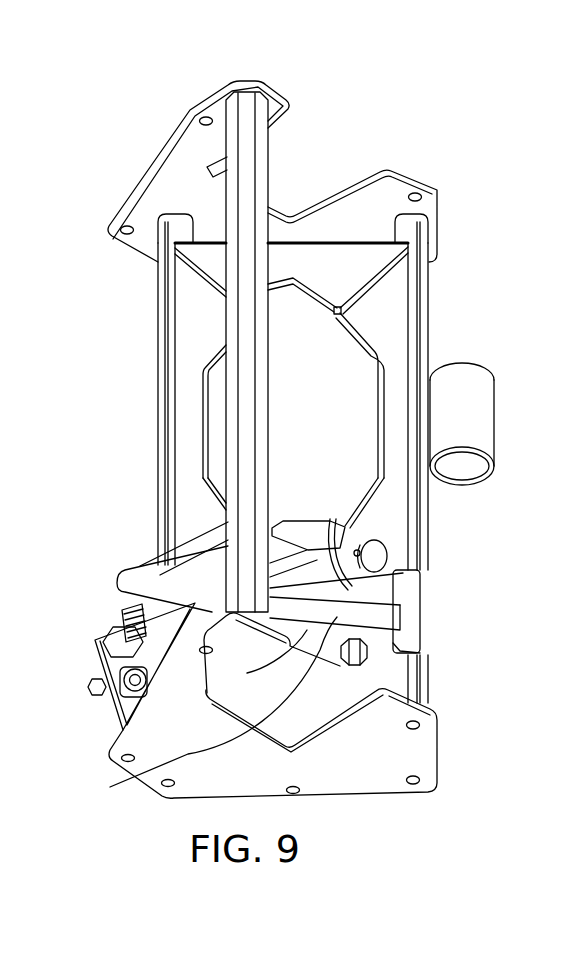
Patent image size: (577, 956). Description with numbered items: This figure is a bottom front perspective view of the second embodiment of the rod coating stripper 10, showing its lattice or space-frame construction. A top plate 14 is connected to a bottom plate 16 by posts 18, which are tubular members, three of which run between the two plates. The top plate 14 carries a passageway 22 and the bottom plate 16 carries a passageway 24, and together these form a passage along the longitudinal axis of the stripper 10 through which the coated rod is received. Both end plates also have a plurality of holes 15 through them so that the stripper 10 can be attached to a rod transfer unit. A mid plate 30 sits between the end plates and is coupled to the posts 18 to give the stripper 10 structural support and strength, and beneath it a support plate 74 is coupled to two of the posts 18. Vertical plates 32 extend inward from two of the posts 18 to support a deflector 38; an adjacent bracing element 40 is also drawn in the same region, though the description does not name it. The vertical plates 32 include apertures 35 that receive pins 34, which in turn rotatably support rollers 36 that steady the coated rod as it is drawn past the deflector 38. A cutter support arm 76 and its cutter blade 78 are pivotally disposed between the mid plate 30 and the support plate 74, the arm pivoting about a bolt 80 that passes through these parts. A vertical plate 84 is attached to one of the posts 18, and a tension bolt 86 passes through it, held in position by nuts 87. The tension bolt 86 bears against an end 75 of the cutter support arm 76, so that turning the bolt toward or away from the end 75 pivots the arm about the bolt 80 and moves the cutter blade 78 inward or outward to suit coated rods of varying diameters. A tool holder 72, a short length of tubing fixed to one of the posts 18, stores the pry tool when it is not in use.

The rod coating stripper 10 is at (346, 71).
The top plate 14 is at (415, 170).
The holes 15 is at (205, 126).
The bottom plate 16 is at (420, 755).
The posts 18 is at (235, 115).
The passageway 22 is at (310, 160).
The passageway 24 is at (317, 700).
The mid plate 30 is at (408, 595).
The vertical plates 32 is at (185, 315).
The pins 34 is at (380, 556).
The apertures 35 is at (360, 552).
The rollers 36 is at (318, 548).
The deflector 38 is at (347, 271).
The chevron brace 40 is at (293, 291).
The tool holder 72 is at (497, 405).
The support plate 74 is at (137, 578).
The end 75 is at (106, 648).
The cutter support arm 76 is at (138, 572).
The cutter blade 78 is at (209, 708).
The bolt 80 is at (353, 665).
The vertical plate 84 is at (122, 612).
The tension bolt 86 is at (88, 689).
The nuts 87 is at (124, 681).